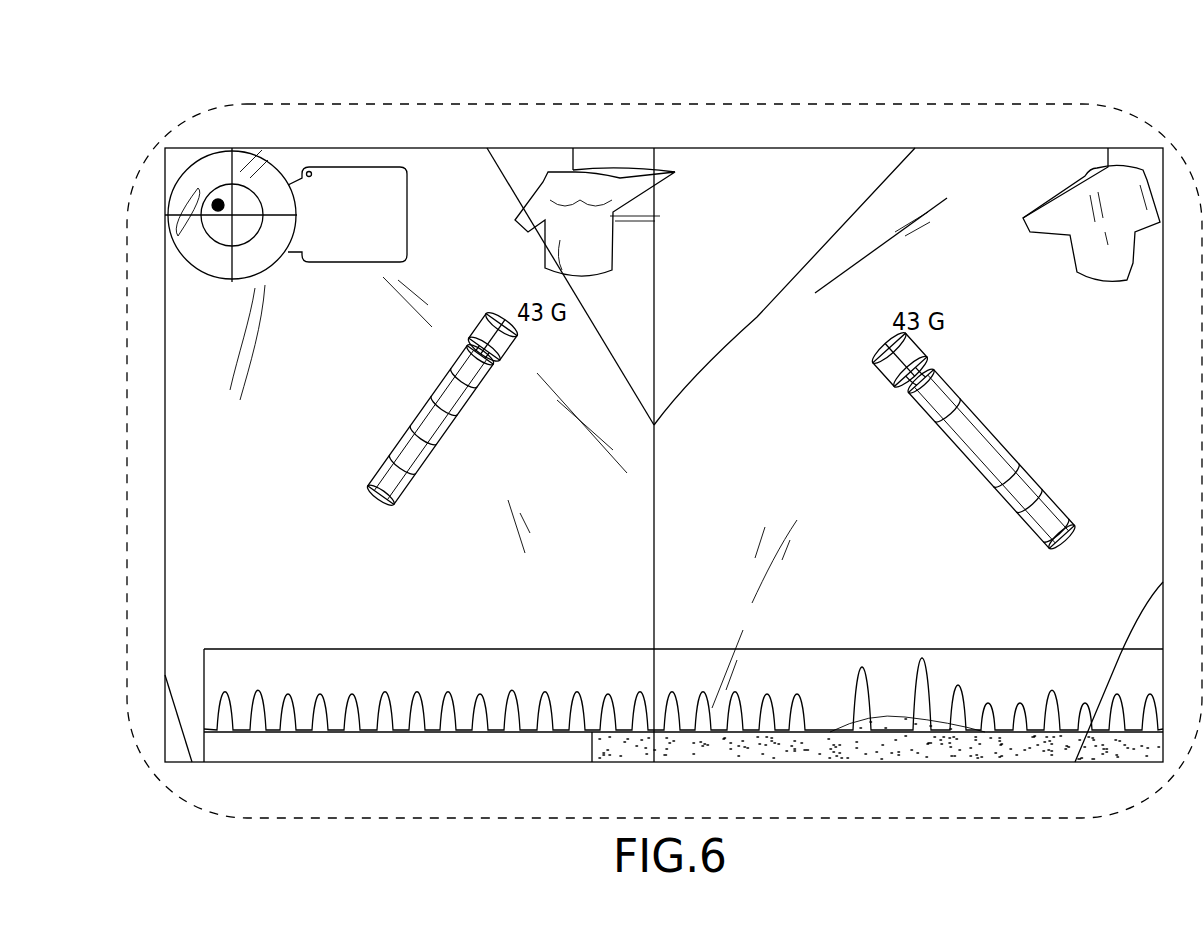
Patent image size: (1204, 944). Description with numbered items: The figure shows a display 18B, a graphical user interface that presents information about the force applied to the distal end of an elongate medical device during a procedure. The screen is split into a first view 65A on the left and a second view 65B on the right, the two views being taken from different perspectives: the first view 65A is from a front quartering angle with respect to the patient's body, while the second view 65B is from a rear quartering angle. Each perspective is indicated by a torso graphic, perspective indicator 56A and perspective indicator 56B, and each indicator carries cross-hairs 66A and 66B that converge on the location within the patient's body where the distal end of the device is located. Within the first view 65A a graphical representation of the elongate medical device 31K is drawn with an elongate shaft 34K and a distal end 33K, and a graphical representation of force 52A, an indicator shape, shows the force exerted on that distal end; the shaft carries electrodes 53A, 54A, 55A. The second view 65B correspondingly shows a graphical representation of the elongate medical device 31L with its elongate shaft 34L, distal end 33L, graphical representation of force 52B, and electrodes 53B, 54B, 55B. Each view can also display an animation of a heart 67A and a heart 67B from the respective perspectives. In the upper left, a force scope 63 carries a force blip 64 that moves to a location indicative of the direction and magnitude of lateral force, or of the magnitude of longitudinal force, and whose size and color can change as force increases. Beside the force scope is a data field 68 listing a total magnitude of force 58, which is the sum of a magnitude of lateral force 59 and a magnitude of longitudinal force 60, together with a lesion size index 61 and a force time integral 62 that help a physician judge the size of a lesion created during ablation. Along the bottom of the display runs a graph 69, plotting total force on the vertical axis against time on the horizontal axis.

The display 18B is at (689, 95).
The force scope 63 is at (258, 152).
The force blip 64 is at (218, 203).
The first view 65A is at (320, 126).
The second view 65B is at (1050, 134).
The data field 68 is at (312, 275).
The total magnitude of force 58 is at (356, 178).
The magnitude of lateral force 59 is at (378, 207).
The magnitude of longitudinal force 60 is at (372, 222).
The lesion size index 61 is at (355, 237).
The force time integral 62 is at (355, 258).
The cross-hairs 66A is at (617, 212).
The cross-hairs 66B is at (1070, 214).
The perspective indicator 56A is at (666, 227).
The perspective indicator 56B is at (1058, 262).
The heart 67A is at (617, 559).
The heart 67B is at (741, 512).
The graphical representation of the elongate medical device 31K is at (368, 397).
The graphical representation of the elongate medical device 31L is at (1024, 386).
The graphical representation of force 52A is at (502, 322).
The graphical representation of force 52B is at (890, 368).
The distal end 33K is at (484, 358).
The distal end 33L is at (917, 404).
The electrode 53A is at (470, 409).
The electrode 53B is at (943, 441).
The electrode 54A is at (417, 457).
The electrode 54B is at (1003, 500).
The electrode 55A is at (400, 492).
The electrode 55B is at (1036, 536).
The elongate shaft 34K is at (384, 424).
The elongate shaft 34L is at (1026, 446).
The graph 69 is at (508, 648).